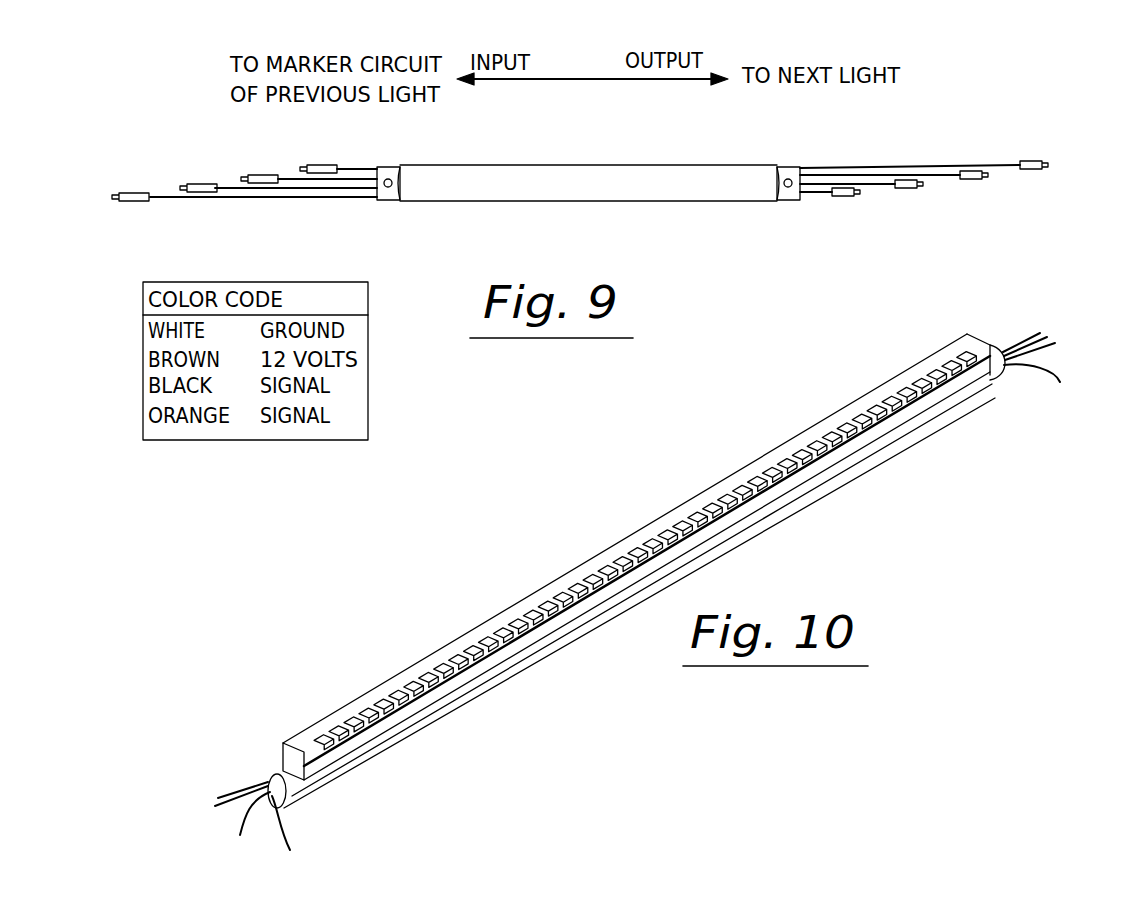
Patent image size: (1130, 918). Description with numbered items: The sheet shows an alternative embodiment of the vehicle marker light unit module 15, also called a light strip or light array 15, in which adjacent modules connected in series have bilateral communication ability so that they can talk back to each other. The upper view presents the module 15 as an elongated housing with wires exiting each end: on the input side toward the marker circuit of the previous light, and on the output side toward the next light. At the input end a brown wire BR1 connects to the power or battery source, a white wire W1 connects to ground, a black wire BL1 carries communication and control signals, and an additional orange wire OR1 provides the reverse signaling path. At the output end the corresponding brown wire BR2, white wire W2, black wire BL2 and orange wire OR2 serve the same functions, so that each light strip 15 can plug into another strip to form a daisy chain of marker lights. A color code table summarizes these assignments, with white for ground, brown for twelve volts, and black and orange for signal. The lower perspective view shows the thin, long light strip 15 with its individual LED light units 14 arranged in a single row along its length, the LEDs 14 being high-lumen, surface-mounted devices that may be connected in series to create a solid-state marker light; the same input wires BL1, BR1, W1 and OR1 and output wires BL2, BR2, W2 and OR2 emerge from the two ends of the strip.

In FIG. 10, the LED light unit 14 is at (847, 405).
In FIG. 10, the vehicle marker light unit module 15 is at (803, 520).
In FIG. 9, the white wire W1 is at (247, 200).
In FIG. 10, the white wire W1 is at (253, 835).
In FIG. 9, the brown wire BR1 is at (232, 186).
In FIG. 10, the brown wire BR1 is at (215, 813).
In FIG. 9, the black wire BL1 is at (298, 178).
In FIG. 10, the black wire BL1 is at (243, 790).
In FIG. 9, the orange wire OR1 is at (357, 168).
In FIG. 10, the orange wire OR1 is at (278, 827).
In FIG. 9, the white wire W2 is at (822, 195).
In FIG. 10, the white wire W2 is at (1053, 338).
In FIG. 9, the brown wire BR2 is at (873, 186).
In FIG. 10, the brown wire BR2 is at (1042, 325).
In FIG. 9, the black wire BL2 is at (940, 176).
In FIG. 10, the black wire BL2 is at (1010, 340).
In FIG. 9, the orange wire OR2 is at (883, 165).
In FIG. 10, the orange wire OR2 is at (1057, 383).